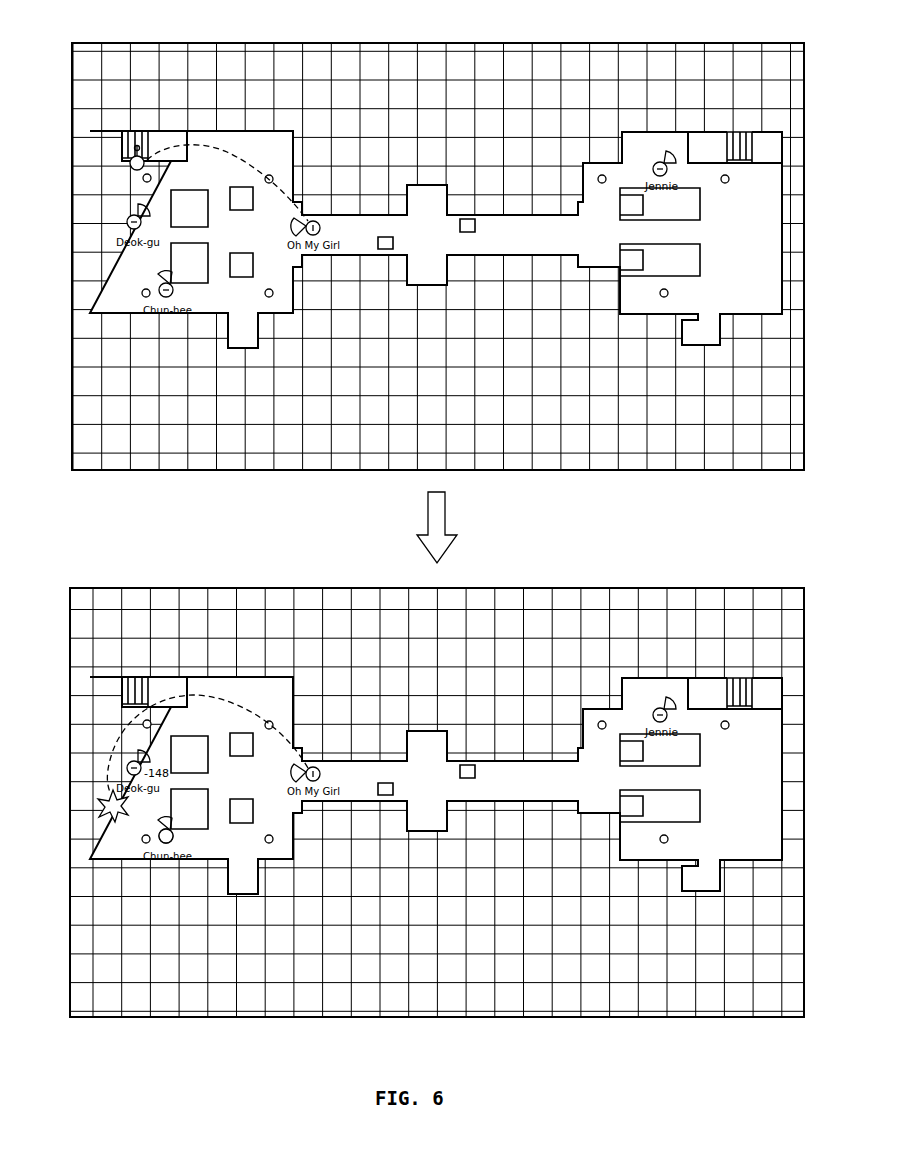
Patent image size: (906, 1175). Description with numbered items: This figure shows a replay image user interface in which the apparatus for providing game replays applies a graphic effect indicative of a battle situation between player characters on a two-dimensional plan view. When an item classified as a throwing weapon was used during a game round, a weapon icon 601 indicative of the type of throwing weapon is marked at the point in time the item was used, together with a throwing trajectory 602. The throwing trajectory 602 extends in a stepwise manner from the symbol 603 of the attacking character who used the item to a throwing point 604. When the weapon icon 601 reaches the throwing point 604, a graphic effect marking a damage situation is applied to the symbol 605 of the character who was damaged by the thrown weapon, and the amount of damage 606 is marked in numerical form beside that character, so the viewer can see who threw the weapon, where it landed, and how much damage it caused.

The weapon icon 601 is at (130, 161).
The throwing trajectory 602 is at (227, 153).
The symbol of attacking character 603 is at (313, 220).
The throwing point 604 is at (98, 804).
The symbol of damaged character 605 is at (168, 845).
The amount of damage 606 is at (192, 830).